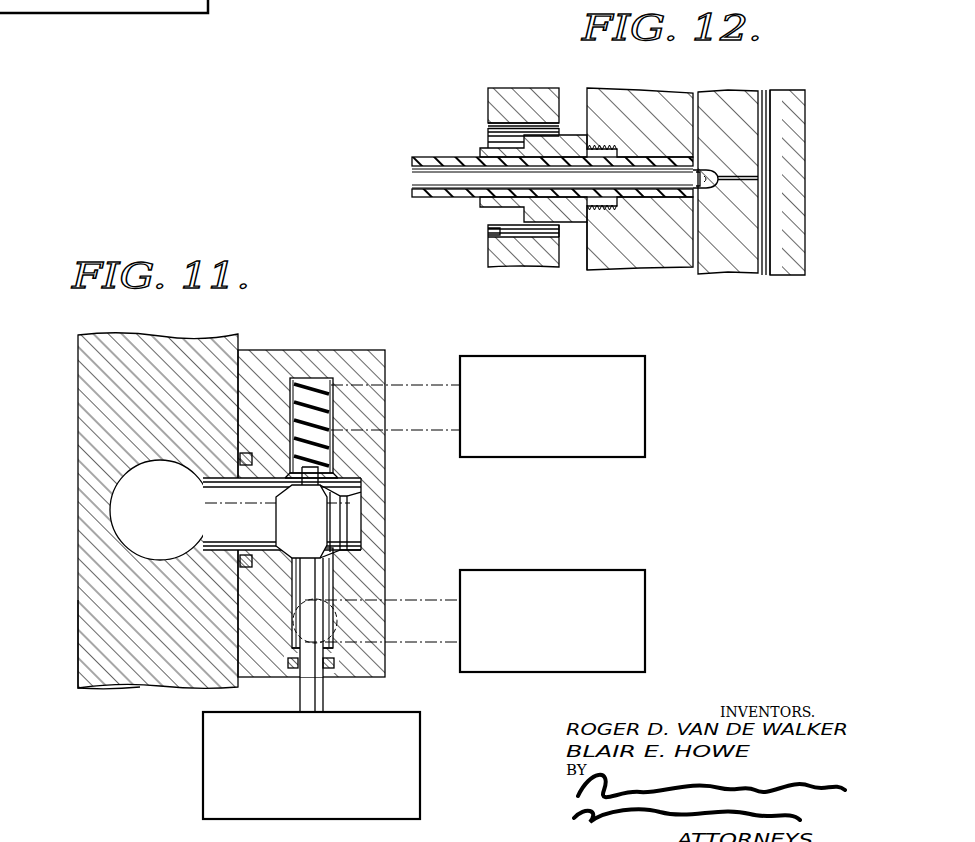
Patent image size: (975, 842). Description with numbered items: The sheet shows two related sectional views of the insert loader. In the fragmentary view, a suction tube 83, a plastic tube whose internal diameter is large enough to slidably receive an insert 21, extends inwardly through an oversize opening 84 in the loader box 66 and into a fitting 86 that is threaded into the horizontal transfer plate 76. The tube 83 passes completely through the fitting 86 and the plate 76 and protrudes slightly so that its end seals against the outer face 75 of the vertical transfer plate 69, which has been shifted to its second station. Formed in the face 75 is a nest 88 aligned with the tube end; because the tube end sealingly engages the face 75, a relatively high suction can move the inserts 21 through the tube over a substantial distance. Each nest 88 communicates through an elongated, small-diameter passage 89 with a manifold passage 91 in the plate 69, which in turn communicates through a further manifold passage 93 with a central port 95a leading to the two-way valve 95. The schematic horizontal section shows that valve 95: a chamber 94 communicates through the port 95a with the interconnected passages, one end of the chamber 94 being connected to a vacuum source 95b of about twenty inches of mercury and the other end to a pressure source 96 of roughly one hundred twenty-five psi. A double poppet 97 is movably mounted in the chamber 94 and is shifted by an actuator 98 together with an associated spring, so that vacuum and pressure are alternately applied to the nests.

In FIG. 12, the insert 21 is at (710, 189).
In FIG. 12, the loader box 66 is at (521, 88).
In FIG. 12, the vertical transfer plate 69 is at (731, 273).
In FIG. 11, the vertical transfer plate 69 is at (85, 633).
In FIG. 12, the outer face 75 is at (700, 258).
In FIG. 11, the outer face 75 is at (69, 364).
In FIG. 12, the horizontal transfer plate 76 is at (636, 270).
In FIG. 12, the suction tube 83 is at (441, 199).
In FIG. 12, the oversize opening 84 is at (490, 232).
In FIG. 12, the fitting 86 is at (573, 226).
In FIG. 12, the nest 88 is at (699, 172).
In FIG. 12, the passage 89 is at (730, 175).
In FIG. 12, the manifold passage 91 is at (776, 90).
In FIG. 11, the manifold passage 93 is at (158, 556).
In FIG. 11, the chamber 94 is at (358, 498).
In FIG. 11, the two-way valve 95 is at (356, 350).
In FIG. 11, the central port 95a is at (214, 485).
In FIG. 11, the vacuum source 95b is at (584, 457).
In FIG. 11, the pressure source 96 is at (603, 570).
In FIG. 11, the double poppet 97 is at (343, 527).
In FIG. 11, the actuator 98 is at (420, 730).